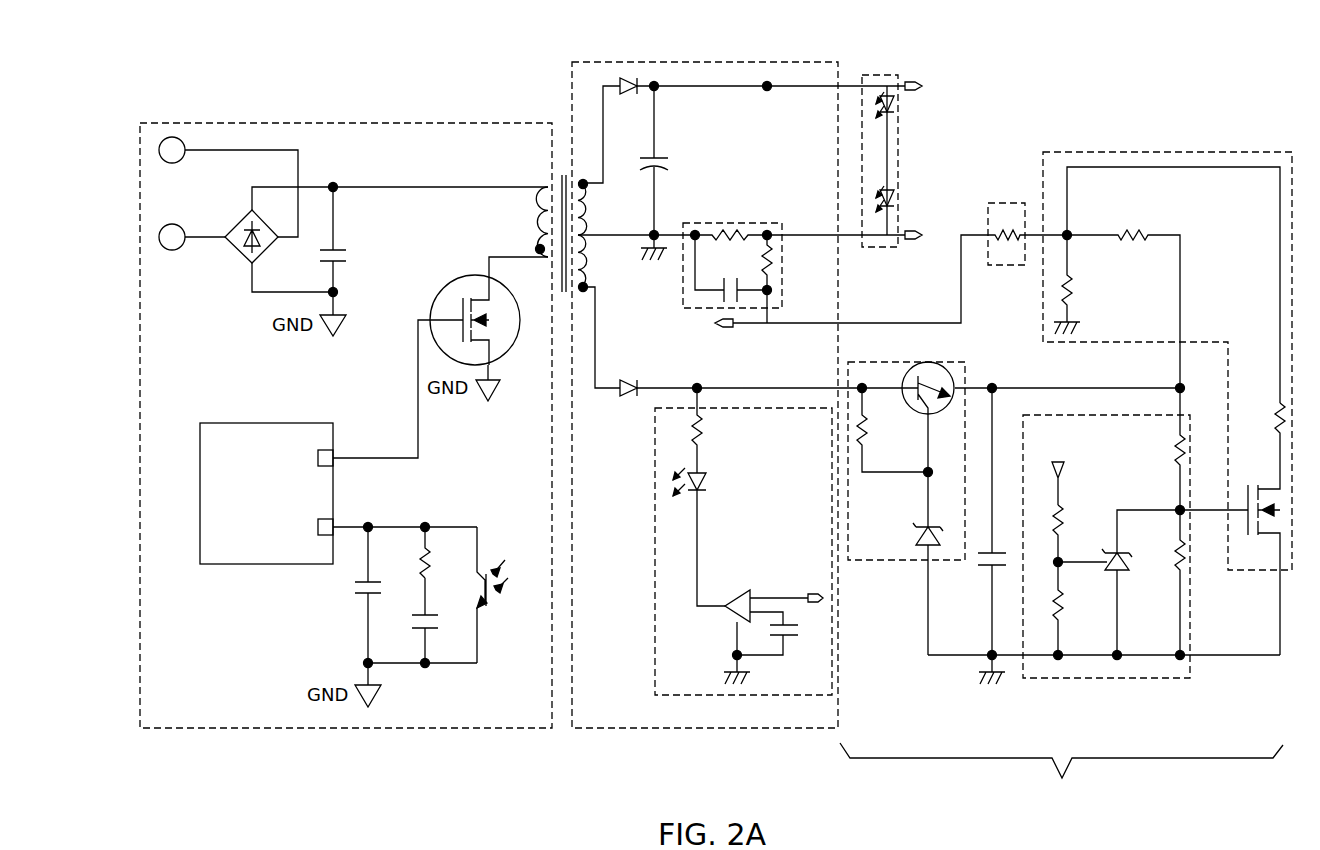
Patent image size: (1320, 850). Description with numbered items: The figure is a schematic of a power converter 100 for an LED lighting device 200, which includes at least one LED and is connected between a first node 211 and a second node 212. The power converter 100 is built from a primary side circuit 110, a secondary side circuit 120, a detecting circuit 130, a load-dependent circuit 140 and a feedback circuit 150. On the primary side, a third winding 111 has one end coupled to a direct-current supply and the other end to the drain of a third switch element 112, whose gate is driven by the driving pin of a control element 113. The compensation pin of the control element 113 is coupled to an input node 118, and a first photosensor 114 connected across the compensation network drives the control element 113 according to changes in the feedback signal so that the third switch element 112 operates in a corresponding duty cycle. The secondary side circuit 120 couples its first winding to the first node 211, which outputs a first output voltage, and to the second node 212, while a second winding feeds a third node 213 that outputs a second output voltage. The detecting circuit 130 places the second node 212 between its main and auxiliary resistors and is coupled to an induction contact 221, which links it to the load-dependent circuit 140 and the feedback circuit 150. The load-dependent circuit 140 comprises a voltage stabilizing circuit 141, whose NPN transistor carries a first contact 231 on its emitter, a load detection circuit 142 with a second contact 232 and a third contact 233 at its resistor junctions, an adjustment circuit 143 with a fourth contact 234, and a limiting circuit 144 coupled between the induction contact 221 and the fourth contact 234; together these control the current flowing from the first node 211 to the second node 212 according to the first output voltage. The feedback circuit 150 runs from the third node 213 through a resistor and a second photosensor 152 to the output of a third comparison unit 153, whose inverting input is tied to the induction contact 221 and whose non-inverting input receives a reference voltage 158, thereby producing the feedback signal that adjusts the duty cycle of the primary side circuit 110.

The power converter 100 is at (218, 746).
The primary side circuit 110 is at (178, 123).
The third winding 111 is at (548, 186).
The third switch element 112 is at (450, 287).
The control element 113 is at (245, 565).
The first photosensor 114 is at (500, 609).
The input node 118 is at (428, 525).
The secondary side circuit 120 is at (630, 62).
The detecting circuit 130 is at (727, 223).
The load-dependent circuit 140 is at (1061, 780).
The voltage stabilizing circuit 141 is at (935, 364).
The load detection circuit 142 is at (1108, 680).
The adjustment circuit 143 is at (1160, 151).
The limiting circuit 144 is at (990, 204).
The feedback circuit 150 is at (655, 656).
The second photosensor 152 is at (704, 476).
The third comparison unit 153 is at (745, 590).
The reference voltage 158 is at (790, 640).
The LED lighting device 200 is at (903, 128).
The first node 211 is at (767, 90).
The second node 212 is at (767, 230).
The third node 213 is at (697, 382).
The induction contact 221 is at (730, 330).
The first contact 231 is at (1178, 386).
The second contact 232 is at (1178, 508).
The third contact 233 is at (1060, 566).
The fourth contact 234 is at (1070, 233).